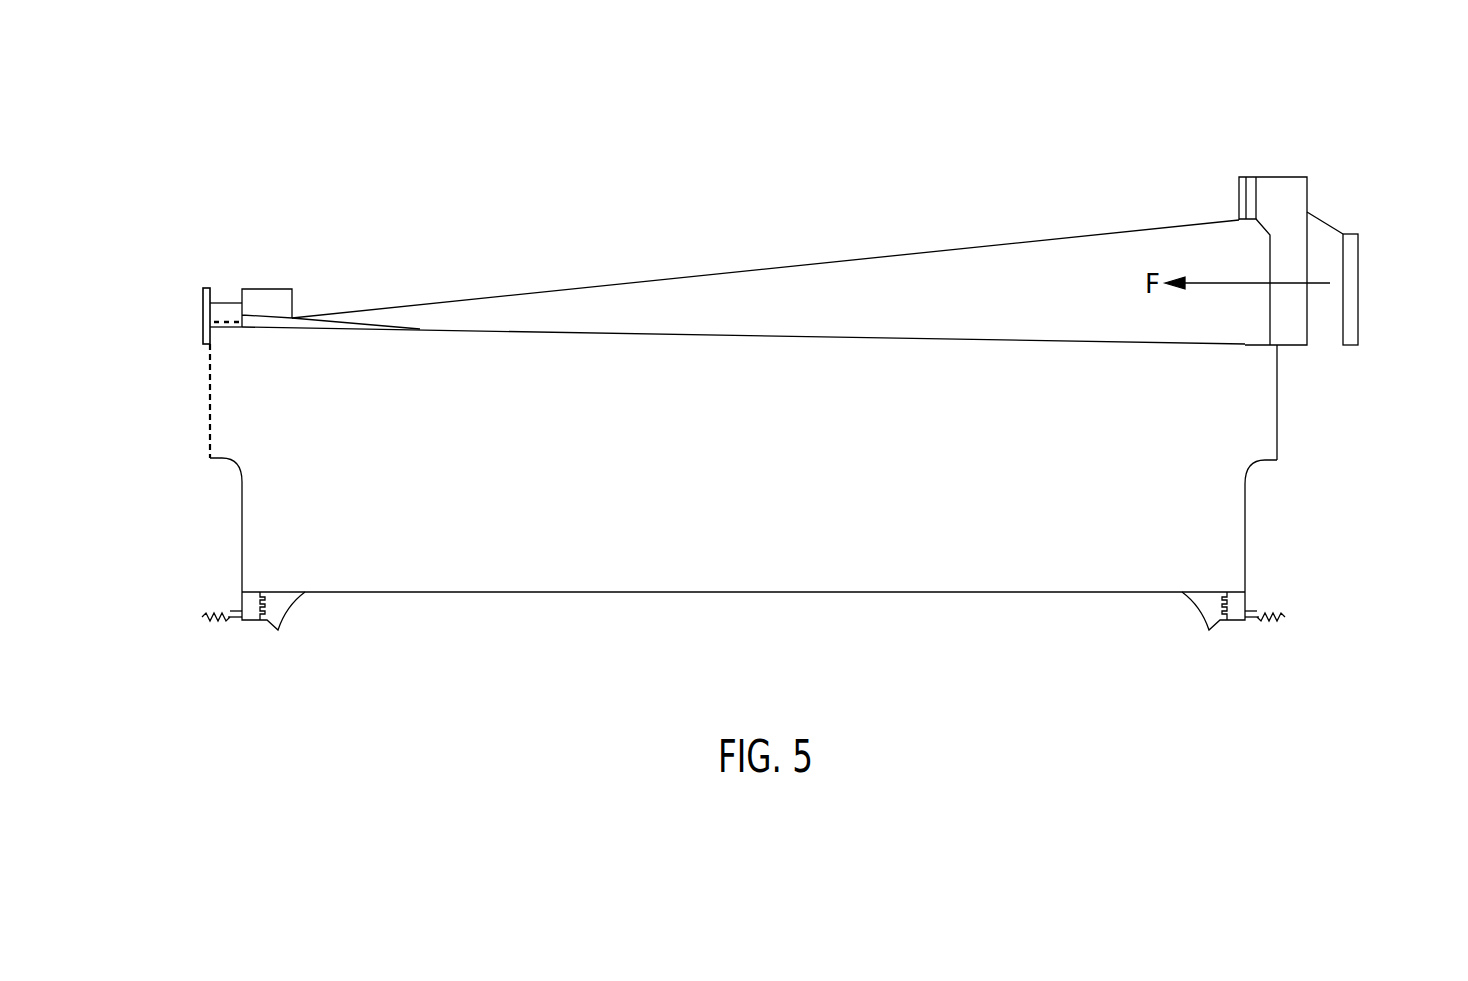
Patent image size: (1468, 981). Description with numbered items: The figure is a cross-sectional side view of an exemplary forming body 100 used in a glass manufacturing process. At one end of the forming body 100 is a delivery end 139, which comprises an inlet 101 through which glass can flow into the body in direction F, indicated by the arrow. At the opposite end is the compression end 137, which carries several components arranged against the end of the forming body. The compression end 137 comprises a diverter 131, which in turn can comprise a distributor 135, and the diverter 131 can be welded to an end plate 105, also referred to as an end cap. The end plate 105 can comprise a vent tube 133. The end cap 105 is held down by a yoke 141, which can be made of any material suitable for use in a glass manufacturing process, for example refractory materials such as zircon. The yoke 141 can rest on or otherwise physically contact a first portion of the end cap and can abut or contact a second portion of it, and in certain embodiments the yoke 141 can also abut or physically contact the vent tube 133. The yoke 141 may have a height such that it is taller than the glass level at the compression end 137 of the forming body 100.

The forming body 100 is at (263, 140).
The inlet 101 is at (1358, 303).
The end plate 105 is at (210, 380).
The diverter 131 is at (352, 315).
The vent tube 133 is at (203, 310).
The distributor 135 is at (270, 288).
The compression end 137 is at (183, 283).
The delivery end 139 is at (1297, 157).
The yoke 141 is at (227, 300).